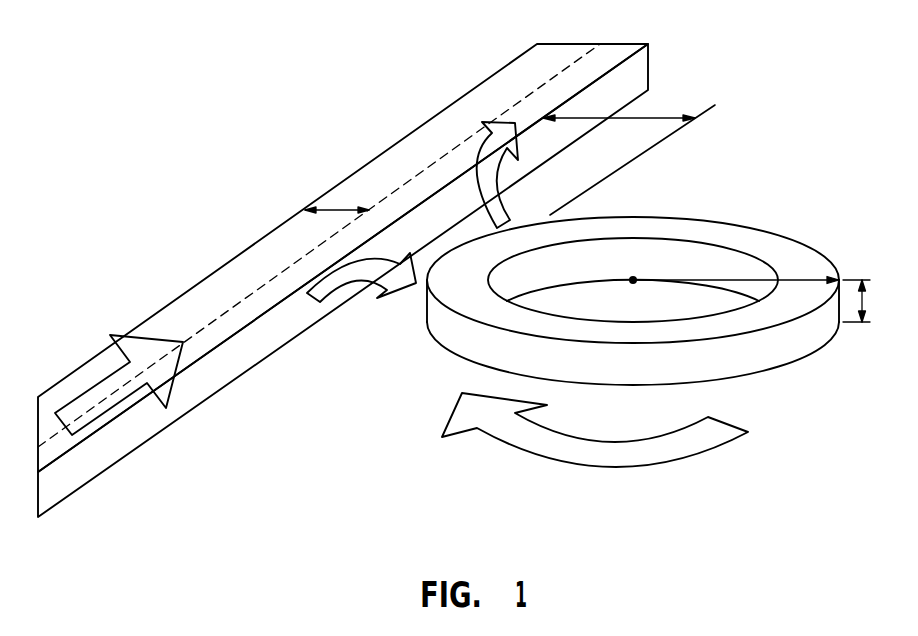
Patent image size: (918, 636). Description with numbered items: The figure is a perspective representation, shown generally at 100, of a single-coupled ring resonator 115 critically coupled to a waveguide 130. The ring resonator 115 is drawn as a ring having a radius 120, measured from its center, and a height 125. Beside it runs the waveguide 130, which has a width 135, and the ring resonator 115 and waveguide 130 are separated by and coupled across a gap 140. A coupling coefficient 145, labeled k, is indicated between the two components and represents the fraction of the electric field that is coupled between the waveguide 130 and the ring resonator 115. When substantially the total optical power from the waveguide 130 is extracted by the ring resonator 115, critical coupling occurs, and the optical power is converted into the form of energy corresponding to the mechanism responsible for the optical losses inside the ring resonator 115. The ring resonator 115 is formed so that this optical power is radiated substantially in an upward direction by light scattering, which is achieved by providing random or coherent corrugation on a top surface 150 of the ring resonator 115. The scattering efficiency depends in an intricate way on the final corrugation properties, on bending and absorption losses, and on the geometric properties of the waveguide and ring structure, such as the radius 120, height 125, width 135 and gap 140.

The single-coupled ring resonator arrangement 100 is at (213, 92).
The ring resonator 115 is at (727, 223).
The radius 120 is at (743, 279).
The height 125 is at (866, 303).
The waveguide 130 is at (235, 258).
The width 135 is at (337, 208).
The gap 140 is at (642, 117).
The coupling coefficient 145 is at (357, 322).
The top surface 150 is at (772, 316).